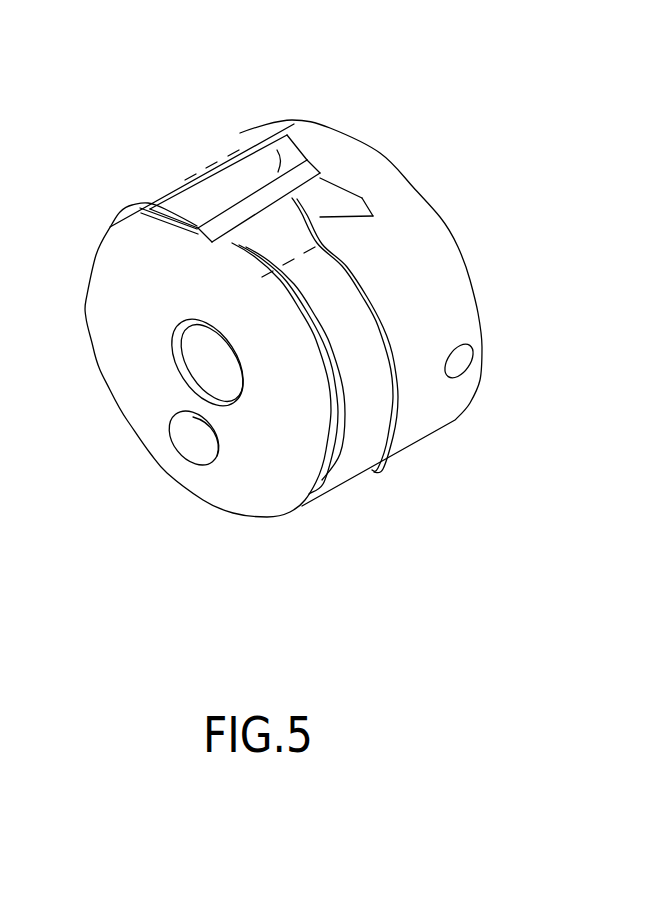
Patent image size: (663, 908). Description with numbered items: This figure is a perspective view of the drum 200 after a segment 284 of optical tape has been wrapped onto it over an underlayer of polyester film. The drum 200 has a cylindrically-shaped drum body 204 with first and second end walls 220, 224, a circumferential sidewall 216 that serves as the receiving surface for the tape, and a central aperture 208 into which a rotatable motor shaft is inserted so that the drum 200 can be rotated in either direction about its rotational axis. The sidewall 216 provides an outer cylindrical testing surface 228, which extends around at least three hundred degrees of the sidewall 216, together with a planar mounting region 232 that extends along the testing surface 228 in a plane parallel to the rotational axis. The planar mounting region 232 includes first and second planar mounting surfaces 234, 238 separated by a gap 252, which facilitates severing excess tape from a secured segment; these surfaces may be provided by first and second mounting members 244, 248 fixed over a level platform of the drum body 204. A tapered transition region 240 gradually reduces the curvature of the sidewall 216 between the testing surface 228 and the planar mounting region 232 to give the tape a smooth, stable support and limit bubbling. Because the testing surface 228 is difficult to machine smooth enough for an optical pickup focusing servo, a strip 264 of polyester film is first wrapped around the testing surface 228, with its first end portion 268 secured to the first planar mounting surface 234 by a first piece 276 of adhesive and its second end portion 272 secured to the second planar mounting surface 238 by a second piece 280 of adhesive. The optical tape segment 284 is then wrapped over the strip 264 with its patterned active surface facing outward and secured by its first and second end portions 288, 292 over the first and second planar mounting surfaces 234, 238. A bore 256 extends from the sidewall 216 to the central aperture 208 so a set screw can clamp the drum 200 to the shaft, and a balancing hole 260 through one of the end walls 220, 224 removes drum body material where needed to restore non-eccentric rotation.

The drum 200 is at (119, 44).
The drum body 204 is at (208, 392).
The central aperture 208 is at (159, 379).
The sidewall 216 is at (310, 335).
The first end wall 220 is at (332, 375).
The second end wall 224 is at (411, 313).
The testing surface 228 is at (486, 233).
The planar mounting region 232 is at (235, 147).
The first planar mounting surface 234 is at (349, 138).
The second planar mounting surface 238 is at (290, 126).
The second tapered transition region 240 is at (140, 192).
The first mounting member 244 is at (271, 316).
The second mounting member 248 is at (103, 226).
The gap 252 is at (238, 279).
The bore 256 is at (502, 354).
The balancing hole 260 is at (147, 462).
The strip of polyester film 264 is at (445, 279).
The first end portion of the strip 268 is at (413, 218).
The second end portion of the strip 272 is at (236, 124).
The first piece of adhesive 276 is at (231, 283).
The second piece of adhesive 280 is at (155, 251).
The optical tape segment 284 is at (364, 248).
The first end portion of the optical tape segment 288 is at (352, 195).
The second end portion of the optical tape segment 292 is at (202, 165).